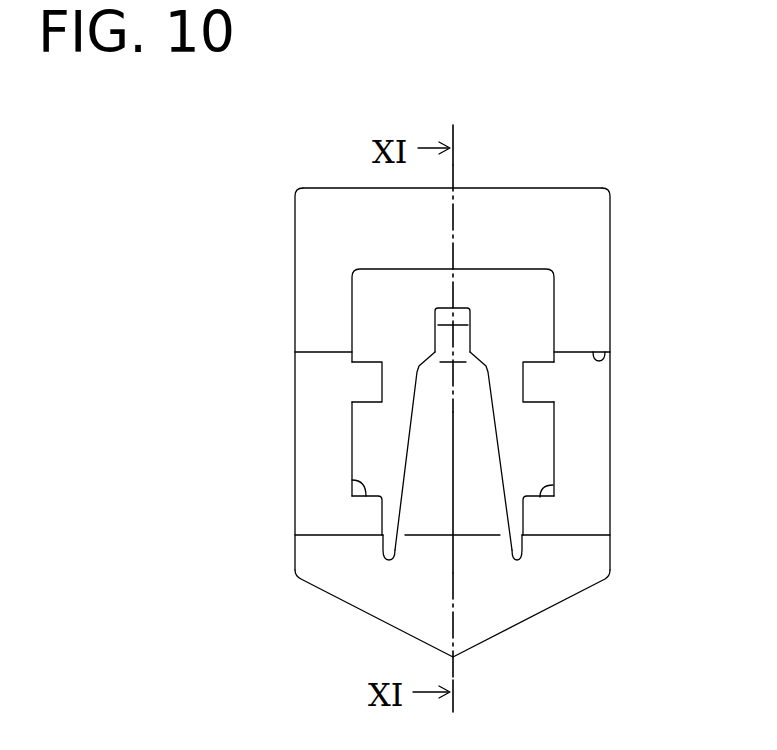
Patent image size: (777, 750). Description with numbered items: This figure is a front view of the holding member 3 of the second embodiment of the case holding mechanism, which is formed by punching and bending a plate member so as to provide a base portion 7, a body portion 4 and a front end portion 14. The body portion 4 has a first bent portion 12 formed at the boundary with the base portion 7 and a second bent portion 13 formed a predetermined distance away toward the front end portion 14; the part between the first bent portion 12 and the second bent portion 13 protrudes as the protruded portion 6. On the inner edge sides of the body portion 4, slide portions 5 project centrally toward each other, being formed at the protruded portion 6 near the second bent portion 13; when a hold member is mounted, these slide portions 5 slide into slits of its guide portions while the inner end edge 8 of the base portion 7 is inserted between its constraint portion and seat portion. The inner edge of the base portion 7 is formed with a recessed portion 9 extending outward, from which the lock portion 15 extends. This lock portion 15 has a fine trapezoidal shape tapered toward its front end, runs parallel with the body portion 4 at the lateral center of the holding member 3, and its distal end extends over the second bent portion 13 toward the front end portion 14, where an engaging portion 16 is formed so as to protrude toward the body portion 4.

The holding member 3 is at (621, 241).
The body portion 4 is at (302, 409).
The slide portions 5 is at (373, 383).
The protruded portion 6 is at (340, 437).
The base portion 7 is at (545, 596).
The inner end edge 8 is at (352, 481).
The recessed portion 9 is at (524, 548).
The first bent portion 12 is at (316, 535).
The second bent portion 13 is at (612, 355).
The front end portion 14 is at (322, 193).
The lock portion 15 is at (483, 477).
The engaging portion 16 is at (462, 335).